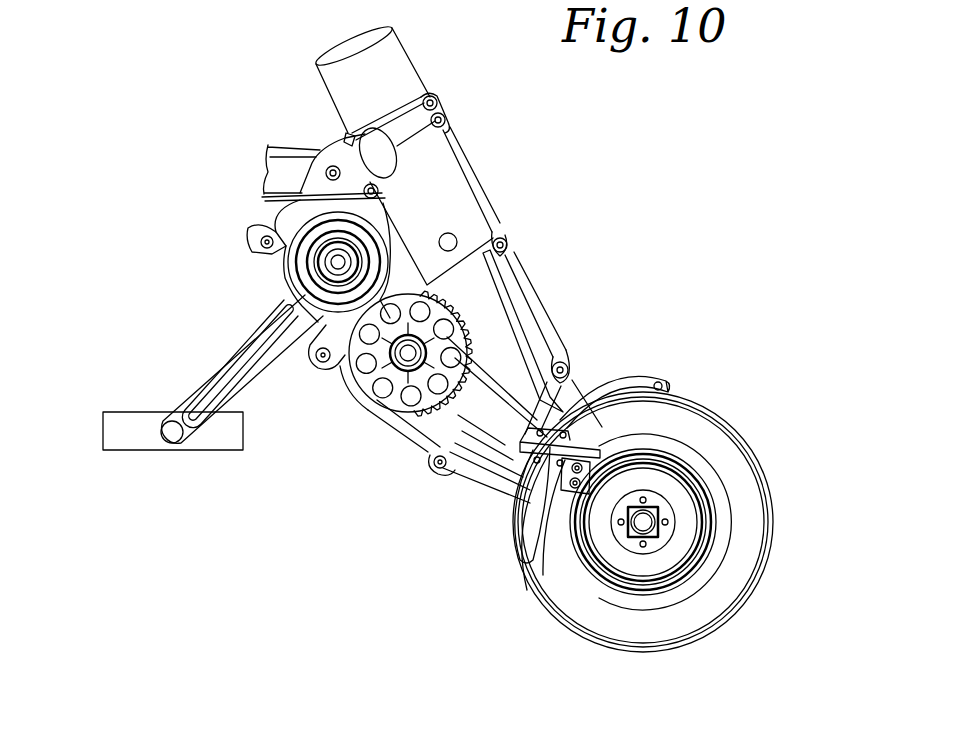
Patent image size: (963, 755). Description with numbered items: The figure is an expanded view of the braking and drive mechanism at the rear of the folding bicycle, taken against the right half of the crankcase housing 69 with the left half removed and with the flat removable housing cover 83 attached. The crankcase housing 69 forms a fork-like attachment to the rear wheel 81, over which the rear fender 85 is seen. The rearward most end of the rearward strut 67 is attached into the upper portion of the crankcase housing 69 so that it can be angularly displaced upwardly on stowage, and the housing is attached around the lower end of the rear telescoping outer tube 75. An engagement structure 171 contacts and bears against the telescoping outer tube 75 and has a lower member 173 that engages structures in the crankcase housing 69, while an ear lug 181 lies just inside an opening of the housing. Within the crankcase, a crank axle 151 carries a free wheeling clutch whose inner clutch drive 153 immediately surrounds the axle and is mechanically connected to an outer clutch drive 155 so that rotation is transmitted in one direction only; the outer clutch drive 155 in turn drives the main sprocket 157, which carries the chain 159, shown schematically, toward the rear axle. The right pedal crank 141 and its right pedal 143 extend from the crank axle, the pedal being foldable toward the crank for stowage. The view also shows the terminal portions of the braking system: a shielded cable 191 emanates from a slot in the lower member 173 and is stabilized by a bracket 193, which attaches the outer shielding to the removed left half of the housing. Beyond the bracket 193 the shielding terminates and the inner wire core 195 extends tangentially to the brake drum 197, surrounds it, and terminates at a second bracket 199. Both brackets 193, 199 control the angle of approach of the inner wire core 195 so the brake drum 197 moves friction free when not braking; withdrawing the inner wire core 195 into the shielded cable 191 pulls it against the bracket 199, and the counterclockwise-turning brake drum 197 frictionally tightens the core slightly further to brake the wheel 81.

The rear wheel 81 is at (77, 13).
The telescoping outer tube 75 is at (398, 58).
The rearward strut 67 is at (290, 148).
The ear lug 181 is at (340, 157).
The crankcase housing 69 is at (465, 158).
The engagement structure 171 is at (457, 240).
The lower member 173 is at (497, 318).
The inner clutch drive 153 is at (333, 257).
The outer clutch drive 155 is at (288, 280).
The crank axle 151 is at (300, 325).
The flat removable housing cover 83 is at (402, 415).
The main sprocket 157 is at (357, 420).
The chain 159 is at (455, 430).
The shielded cable 191 is at (498, 485).
The bracket 193 is at (525, 535).
The bracket 199 is at (545, 540).
The rear fender 85 is at (620, 382).
The inner wire core 195 is at (623, 440).
The brake drum 197 is at (693, 493).
The right pedal crank 141 is at (183, 384).
The right pedal 143 is at (223, 452).